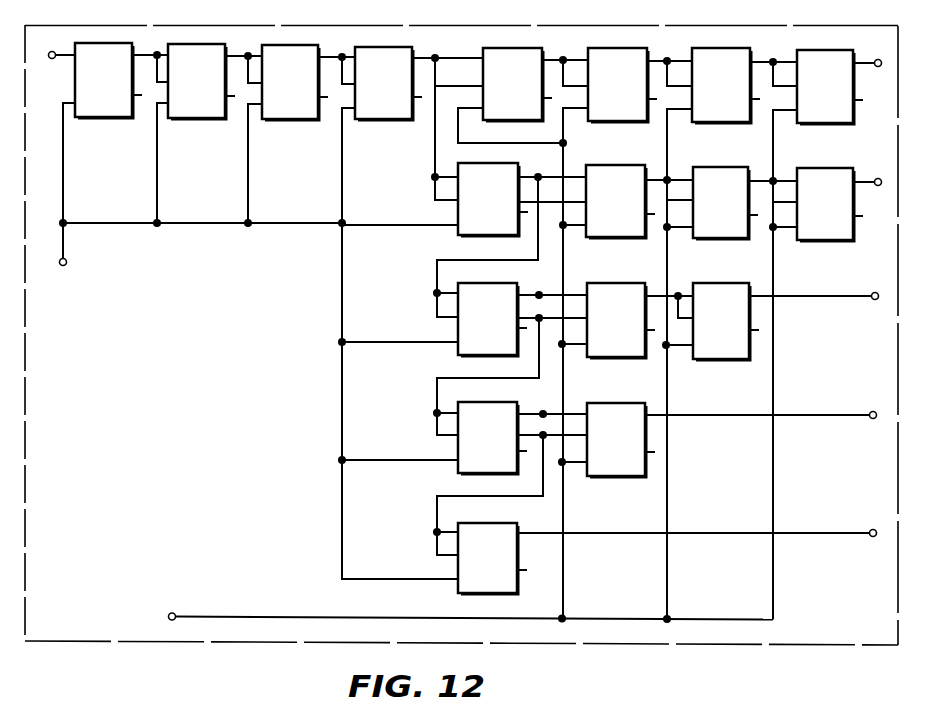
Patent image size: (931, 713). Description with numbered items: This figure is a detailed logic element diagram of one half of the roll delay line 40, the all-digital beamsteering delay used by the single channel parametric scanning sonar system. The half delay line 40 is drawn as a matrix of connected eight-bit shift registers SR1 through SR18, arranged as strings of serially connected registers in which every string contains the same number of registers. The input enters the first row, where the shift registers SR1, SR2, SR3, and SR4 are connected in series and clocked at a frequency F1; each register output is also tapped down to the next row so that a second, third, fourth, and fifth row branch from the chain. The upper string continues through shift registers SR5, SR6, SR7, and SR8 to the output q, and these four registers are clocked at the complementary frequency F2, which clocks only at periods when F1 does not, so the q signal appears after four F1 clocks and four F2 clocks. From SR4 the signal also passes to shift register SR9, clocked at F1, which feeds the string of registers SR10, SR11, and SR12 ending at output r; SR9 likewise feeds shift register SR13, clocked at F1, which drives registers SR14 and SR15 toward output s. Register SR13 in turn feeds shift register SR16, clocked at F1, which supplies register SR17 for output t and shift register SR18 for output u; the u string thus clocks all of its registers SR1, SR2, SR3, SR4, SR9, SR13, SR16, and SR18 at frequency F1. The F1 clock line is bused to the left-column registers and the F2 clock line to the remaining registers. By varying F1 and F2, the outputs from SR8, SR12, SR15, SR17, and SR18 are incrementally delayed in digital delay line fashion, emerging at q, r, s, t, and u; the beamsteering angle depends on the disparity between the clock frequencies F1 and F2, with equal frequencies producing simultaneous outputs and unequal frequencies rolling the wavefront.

The roll delay line 40 is at (371, 24).
The shift register SR1 is at (108, 80).
The shift register SR2 is at (201, 81).
The shift register SR3 is at (295, 82).
The shift register SR4 is at (388, 83).
The shift register SR5 is at (517, 84).
The shift register SR6 is at (622, 85).
The shift register SR7 is at (726, 85).
The shift register SR8 is at (830, 87).
The shift register SR9 is at (493, 199).
The shift register SR10 is at (620, 201).
The shift register SR11 is at (725, 203).
The shift register SR12 is at (830, 204).
The shift register SR13 is at (492, 319).
The shift register SR14 is at (621, 320).
The shift register SR15 is at (726, 321).
The shift register SR16 is at (492, 438).
The shift register SR17 is at (621, 440).
The shift register SR18 is at (492, 558).
The clock frequency F1 is at (60, 176).
The clock frequency F2 is at (447, 619).
The output q is at (870, 51).
The output r is at (868, 170).
The output s is at (816, 284).
The output t is at (763, 403).
The output u is at (701, 521).